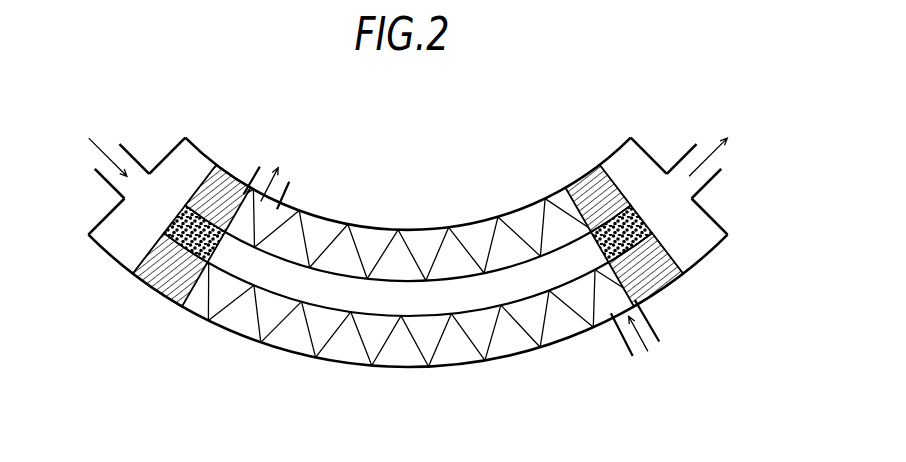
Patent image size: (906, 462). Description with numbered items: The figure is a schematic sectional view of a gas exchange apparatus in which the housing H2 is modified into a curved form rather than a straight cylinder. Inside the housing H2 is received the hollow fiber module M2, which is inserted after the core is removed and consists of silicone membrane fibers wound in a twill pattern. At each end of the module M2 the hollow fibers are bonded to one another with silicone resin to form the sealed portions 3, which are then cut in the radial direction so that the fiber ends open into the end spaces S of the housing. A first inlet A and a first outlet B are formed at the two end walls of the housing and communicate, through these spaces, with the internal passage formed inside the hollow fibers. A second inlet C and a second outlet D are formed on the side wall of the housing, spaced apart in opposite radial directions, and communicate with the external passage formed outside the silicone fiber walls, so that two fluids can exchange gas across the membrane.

The first inlet A is at (133, 162).
The first outlet B is at (679, 156).
The second inlet C is at (623, 338).
The second outlet D is at (288, 187).
The space at end of channel S is at (178, 221).
The sealed portion 3 is at (158, 280).
The housing H2 is at (463, 216).
The hollow fiber module M2 is at (688, 253).